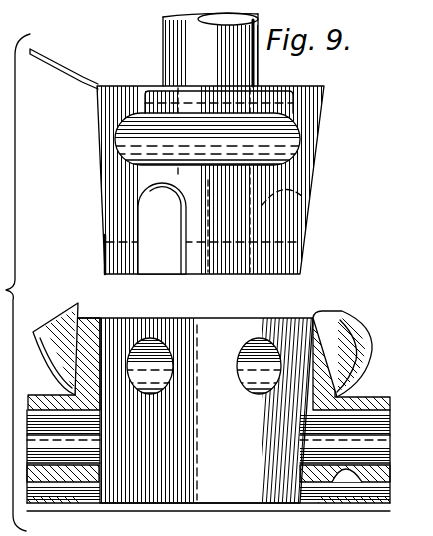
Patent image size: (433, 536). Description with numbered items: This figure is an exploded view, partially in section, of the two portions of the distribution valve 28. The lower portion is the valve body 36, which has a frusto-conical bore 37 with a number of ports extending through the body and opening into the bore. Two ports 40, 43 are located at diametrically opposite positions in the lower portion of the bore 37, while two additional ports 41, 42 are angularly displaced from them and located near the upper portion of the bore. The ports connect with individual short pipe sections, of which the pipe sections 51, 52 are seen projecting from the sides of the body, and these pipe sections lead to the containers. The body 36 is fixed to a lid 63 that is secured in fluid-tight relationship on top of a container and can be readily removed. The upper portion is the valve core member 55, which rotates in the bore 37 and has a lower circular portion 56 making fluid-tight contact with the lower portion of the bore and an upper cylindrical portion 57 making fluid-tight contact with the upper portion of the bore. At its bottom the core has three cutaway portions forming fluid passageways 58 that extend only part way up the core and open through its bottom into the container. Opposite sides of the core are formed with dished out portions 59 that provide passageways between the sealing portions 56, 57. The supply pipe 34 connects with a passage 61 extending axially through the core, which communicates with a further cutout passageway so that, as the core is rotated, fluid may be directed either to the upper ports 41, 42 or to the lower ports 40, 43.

The distribution valve 28 is at (329, 279).
The supply pipe 34 is at (170, 28).
The valve body 36 is at (340, 335).
The frusto-conical bore 37 is at (82, 333).
The port 40 is at (360, 463).
The port 41 is at (258, 342).
The port 42 is at (160, 342).
The port 43 is at (93, 455).
The short pipe section 51 is at (362, 378).
The short pipe section 52 is at (68, 368).
The valve core member 55 is at (290, 96).
The lower circular portion 56 is at (107, 252).
The upper cylindrical portion 57 is at (98, 100).
The fluid passageways 58 is at (138, 199).
The dished out portions 59 is at (148, 120).
The passage 61 is at (243, 176).
The lid 63 is at (70, 458).